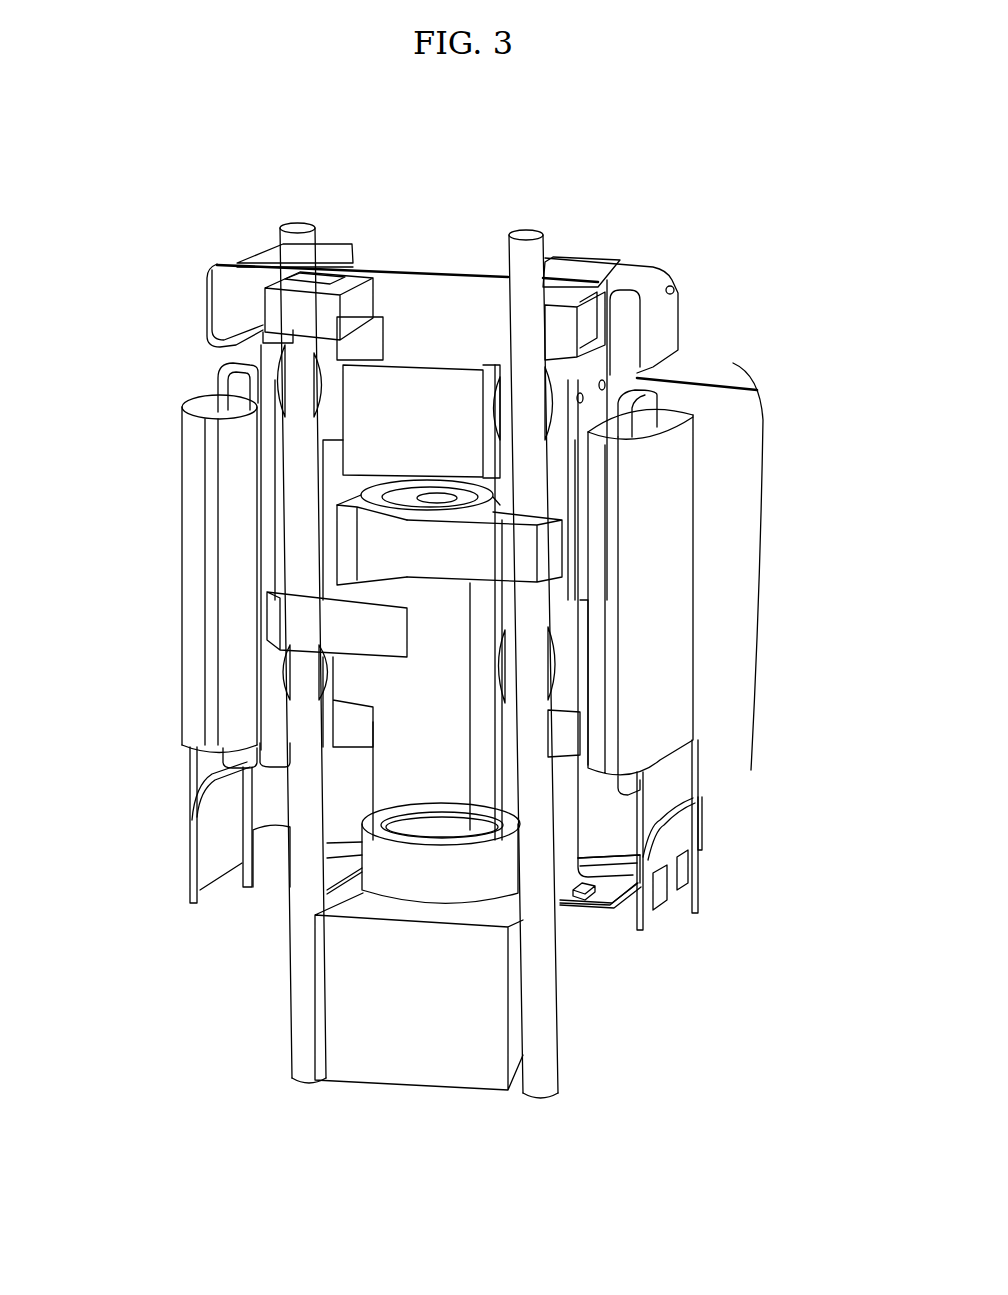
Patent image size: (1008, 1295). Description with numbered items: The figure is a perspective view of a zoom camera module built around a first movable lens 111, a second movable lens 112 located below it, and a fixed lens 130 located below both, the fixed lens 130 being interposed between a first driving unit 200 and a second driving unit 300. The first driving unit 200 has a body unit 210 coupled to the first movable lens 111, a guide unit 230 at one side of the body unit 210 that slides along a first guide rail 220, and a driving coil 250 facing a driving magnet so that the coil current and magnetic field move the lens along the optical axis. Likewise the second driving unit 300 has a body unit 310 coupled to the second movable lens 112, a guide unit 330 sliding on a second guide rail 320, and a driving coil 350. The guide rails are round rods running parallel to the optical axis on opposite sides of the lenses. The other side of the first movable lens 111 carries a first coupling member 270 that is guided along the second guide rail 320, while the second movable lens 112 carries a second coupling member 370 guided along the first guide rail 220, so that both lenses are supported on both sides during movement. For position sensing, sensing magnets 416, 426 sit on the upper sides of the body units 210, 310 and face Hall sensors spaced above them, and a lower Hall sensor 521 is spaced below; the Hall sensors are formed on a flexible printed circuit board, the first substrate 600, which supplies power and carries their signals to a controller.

The first movable lens 111 is at (375, 533).
The second movable lens 112 is at (420, 683).
The fixed lens 130 is at (393, 867).
The first driving unit 200 is at (80, 418).
The body unit 210 is at (270, 538).
The first guide rail 220 is at (283, 340).
The guide unit 230 is at (280, 390).
The driving coil 250 is at (233, 710).
The first coupling member 270 is at (447, 556).
The second driving unit 300 is at (843, 318).
The body unit 310 is at (563, 497).
The second guide rail 320 is at (533, 457).
The guide unit 330 is at (547, 400).
The driving coil 350 is at (647, 680).
The second coupling member 370 is at (557, 600).
The sensing magnet 416 is at (328, 278).
The sensing magnet 426 is at (573, 293).
The Hall sensor 521 is at (593, 882).
The first substrate 600 is at (442, 290).